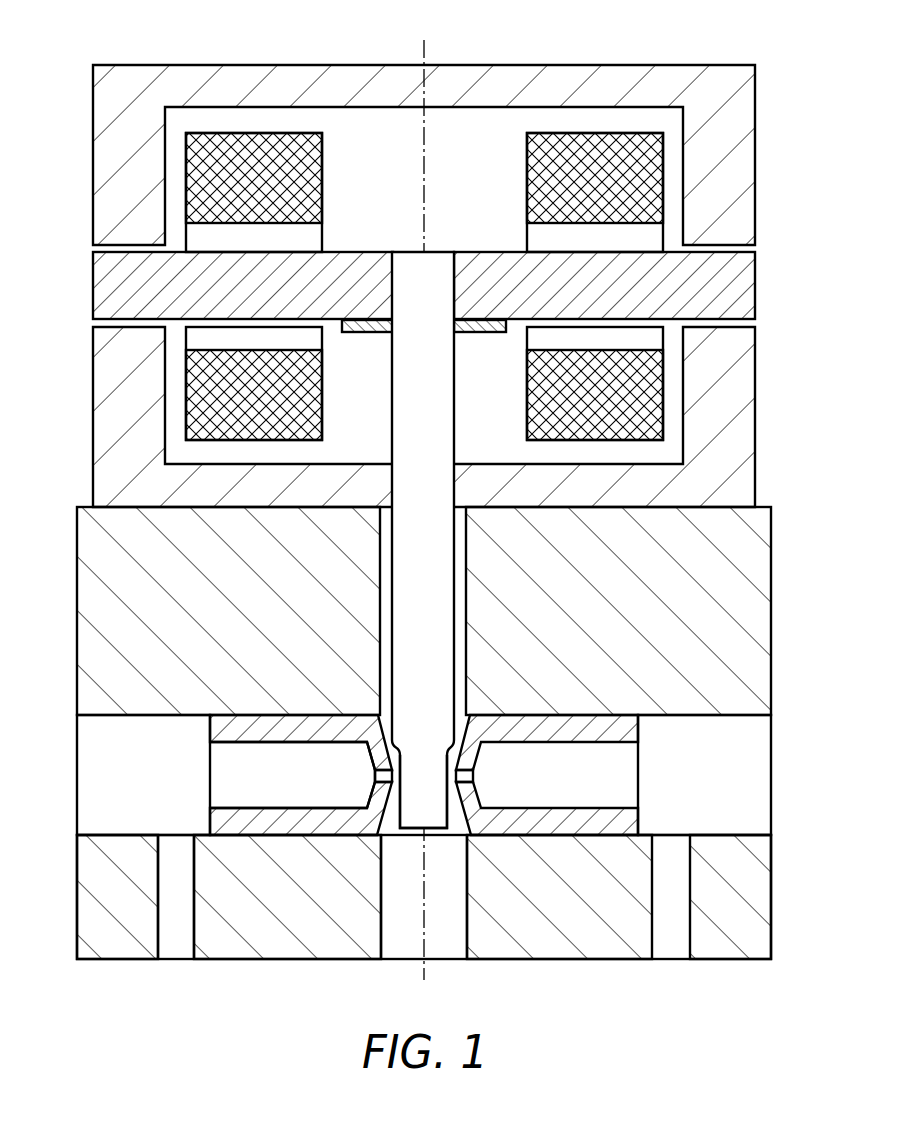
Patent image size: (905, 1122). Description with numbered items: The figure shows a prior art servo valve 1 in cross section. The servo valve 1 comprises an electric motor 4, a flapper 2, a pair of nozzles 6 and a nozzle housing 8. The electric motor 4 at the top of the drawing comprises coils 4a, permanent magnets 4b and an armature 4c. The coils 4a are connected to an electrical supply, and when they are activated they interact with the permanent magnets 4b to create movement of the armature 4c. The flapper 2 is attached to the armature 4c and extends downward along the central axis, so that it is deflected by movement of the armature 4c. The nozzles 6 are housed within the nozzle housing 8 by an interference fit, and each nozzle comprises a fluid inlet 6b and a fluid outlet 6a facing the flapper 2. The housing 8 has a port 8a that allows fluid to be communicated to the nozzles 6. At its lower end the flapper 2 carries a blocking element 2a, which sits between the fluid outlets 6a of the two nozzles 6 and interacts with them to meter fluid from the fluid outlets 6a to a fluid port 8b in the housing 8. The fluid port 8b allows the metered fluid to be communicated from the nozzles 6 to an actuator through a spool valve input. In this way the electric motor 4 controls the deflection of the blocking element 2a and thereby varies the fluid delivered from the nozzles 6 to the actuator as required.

The servo valve 1 is at (83, 53).
The flapper 2 is at (442, 565).
The blocking element 2a is at (418, 782).
The electric motor 4 is at (453, 254).
The coils 4a is at (527, 176).
The permanent magnets 4b is at (743, 158).
The armature 4c is at (743, 283).
The nozzles 6 is at (397, 775).
The fluid outlet 6a is at (375, 777).
The fluid inlet 6b is at (224, 775).
The nozzle housing 8 is at (403, 760).
The port 8a is at (177, 947).
The fluid port 8b is at (403, 945).